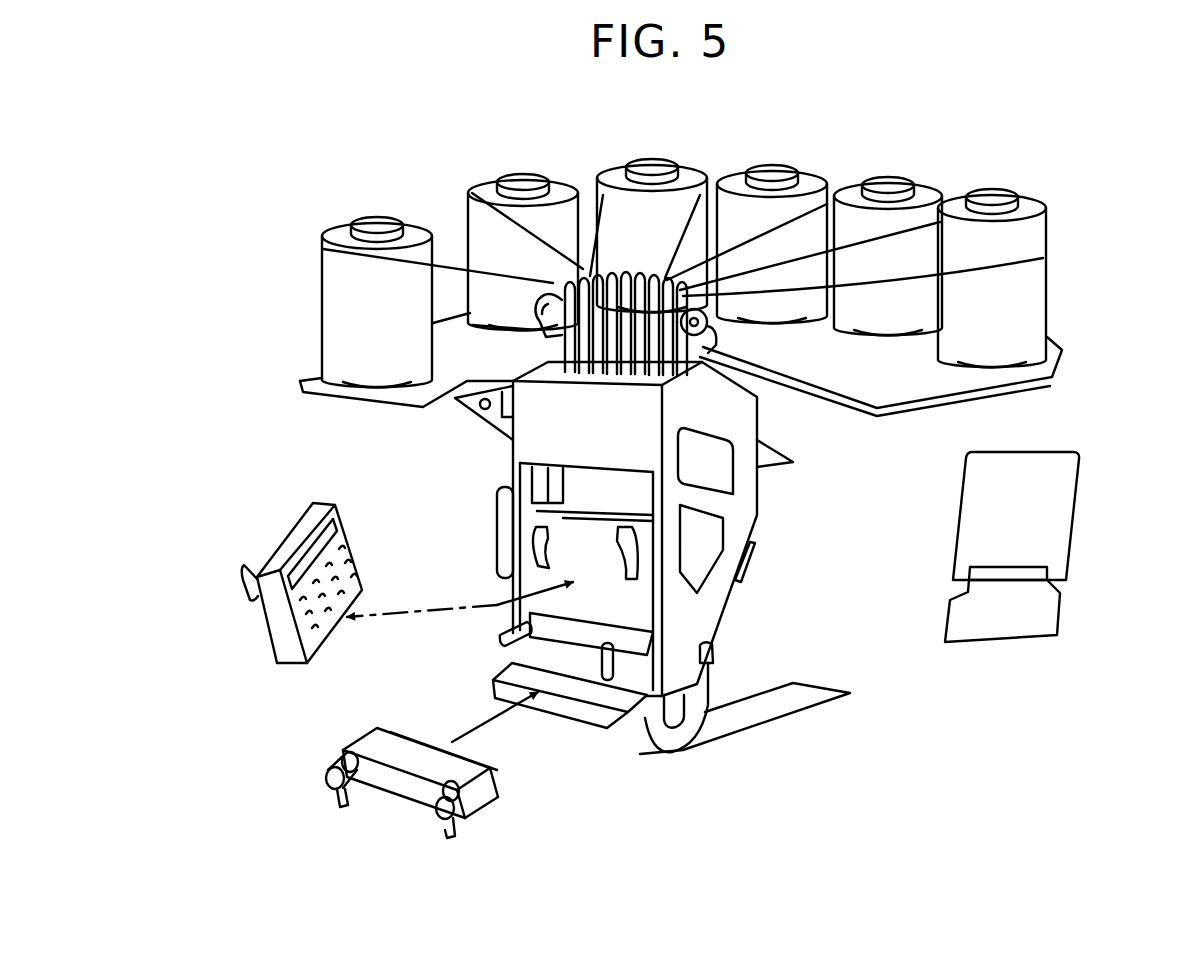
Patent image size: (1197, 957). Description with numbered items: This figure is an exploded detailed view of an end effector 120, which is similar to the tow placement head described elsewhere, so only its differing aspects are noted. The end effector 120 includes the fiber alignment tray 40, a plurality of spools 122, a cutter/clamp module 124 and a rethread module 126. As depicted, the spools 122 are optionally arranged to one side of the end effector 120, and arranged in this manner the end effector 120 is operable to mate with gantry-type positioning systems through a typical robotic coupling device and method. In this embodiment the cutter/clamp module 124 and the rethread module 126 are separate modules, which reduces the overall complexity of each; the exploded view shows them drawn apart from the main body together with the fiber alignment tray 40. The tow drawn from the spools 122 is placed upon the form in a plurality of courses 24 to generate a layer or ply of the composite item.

The end effector 120 is at (994, 145).
The spool 122 is at (1057, 273).
The fiber alignment tray 40 is at (1073, 530).
The course 24 is at (767, 688).
The rethread module 126 is at (270, 665).
The cutter/clamp module 124 is at (400, 808).